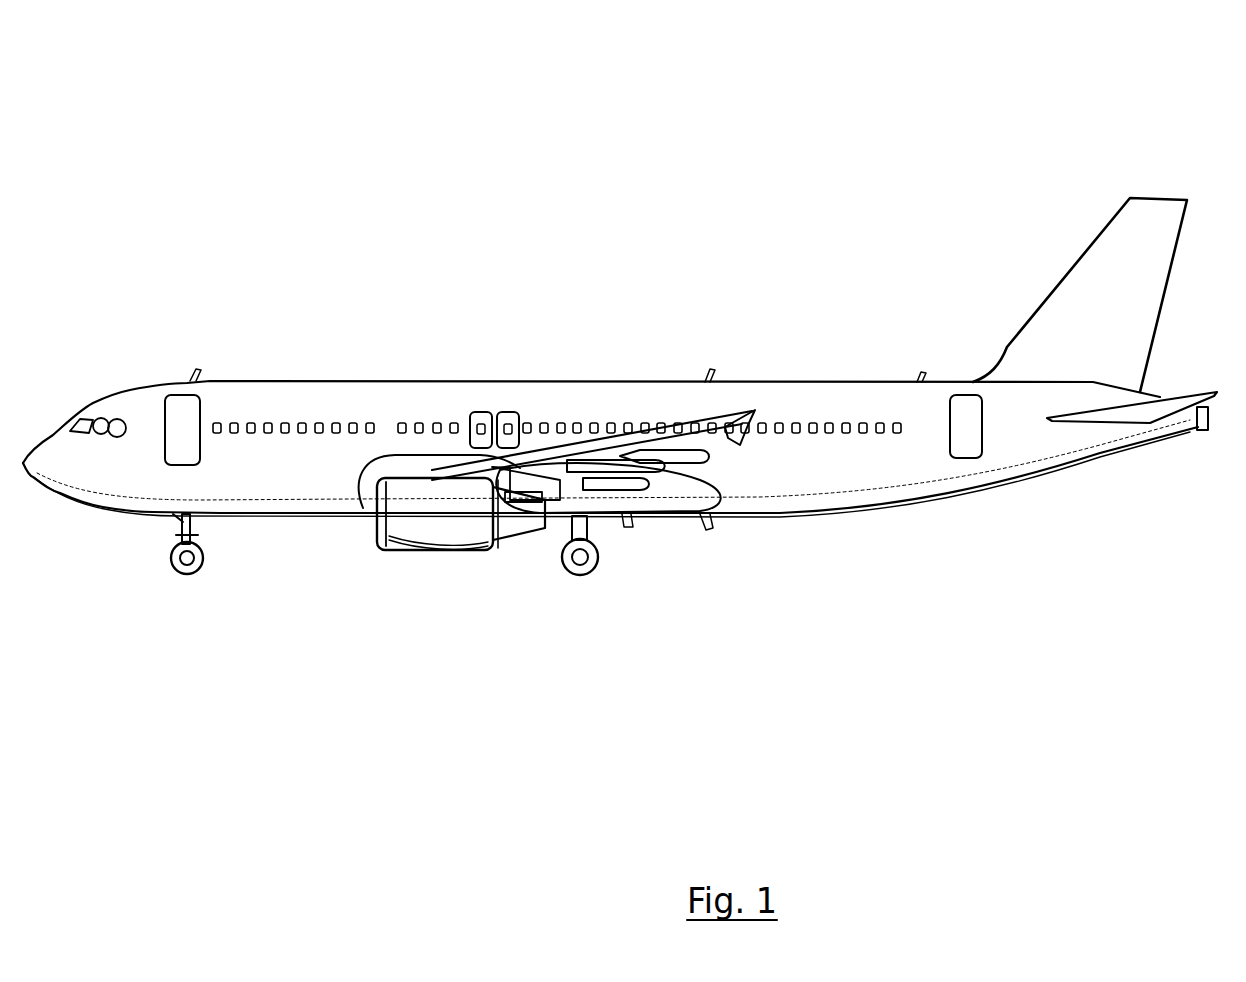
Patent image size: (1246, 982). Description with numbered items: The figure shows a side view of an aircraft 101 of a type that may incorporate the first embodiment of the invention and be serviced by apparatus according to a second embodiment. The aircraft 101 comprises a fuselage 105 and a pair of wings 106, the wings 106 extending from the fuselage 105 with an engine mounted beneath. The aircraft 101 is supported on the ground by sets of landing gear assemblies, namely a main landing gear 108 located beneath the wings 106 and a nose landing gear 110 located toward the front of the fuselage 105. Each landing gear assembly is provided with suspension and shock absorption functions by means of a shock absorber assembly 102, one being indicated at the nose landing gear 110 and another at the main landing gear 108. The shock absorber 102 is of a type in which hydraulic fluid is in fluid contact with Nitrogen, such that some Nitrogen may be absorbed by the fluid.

The aircraft 101 is at (960, 162).
The shock absorber assembly 102 is at (213, 525).
The fuselage 105 is at (276, 403).
The wings 106 is at (685, 442).
The main landing gear 108 is at (582, 559).
The nose landing gear 110 is at (185, 560).